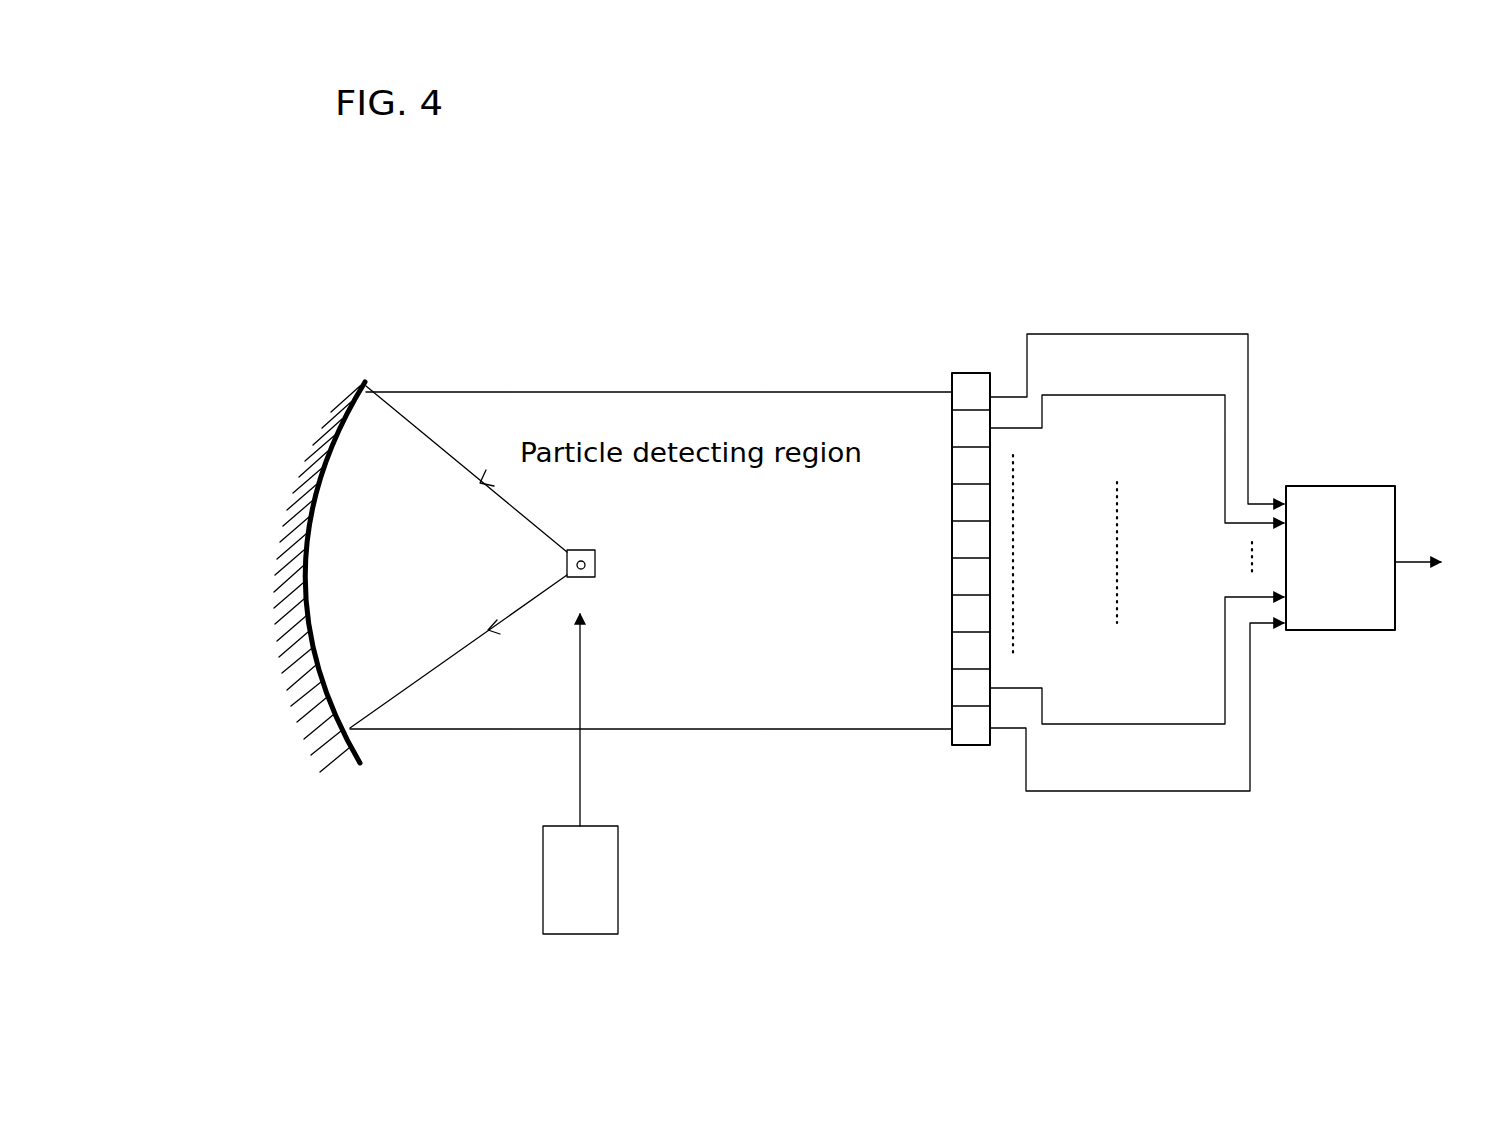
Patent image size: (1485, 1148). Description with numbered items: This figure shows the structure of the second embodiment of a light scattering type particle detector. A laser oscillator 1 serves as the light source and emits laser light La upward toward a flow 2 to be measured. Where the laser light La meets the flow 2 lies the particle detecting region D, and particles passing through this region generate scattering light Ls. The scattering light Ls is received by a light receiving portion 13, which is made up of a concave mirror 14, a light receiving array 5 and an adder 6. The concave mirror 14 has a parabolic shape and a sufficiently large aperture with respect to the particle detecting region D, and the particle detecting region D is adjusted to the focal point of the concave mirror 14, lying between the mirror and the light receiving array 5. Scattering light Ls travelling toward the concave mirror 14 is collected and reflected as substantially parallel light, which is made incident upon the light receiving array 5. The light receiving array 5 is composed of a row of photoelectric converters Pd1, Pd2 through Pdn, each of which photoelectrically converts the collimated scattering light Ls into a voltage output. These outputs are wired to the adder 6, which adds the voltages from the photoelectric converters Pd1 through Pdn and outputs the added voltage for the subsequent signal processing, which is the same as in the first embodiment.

The laser oscillator 1 is at (618, 915).
The flow 2 is at (595, 556).
The light receiving array 5 is at (1042, 551).
The adder 6 is at (1350, 486).
The light receiving portion 13 is at (1292, 198).
The concave mirror 14 is at (337, 427).
The particle detecting region D is at (578, 552).
The laser light La is at (580, 780).
The scattering light Ls is at (456, 462).
The photoelectric converter Pdn is at (952, 373).
The photoelectric converter Pd2 is at (952, 688).
The photoelectric converter Pd1 is at (962, 738).